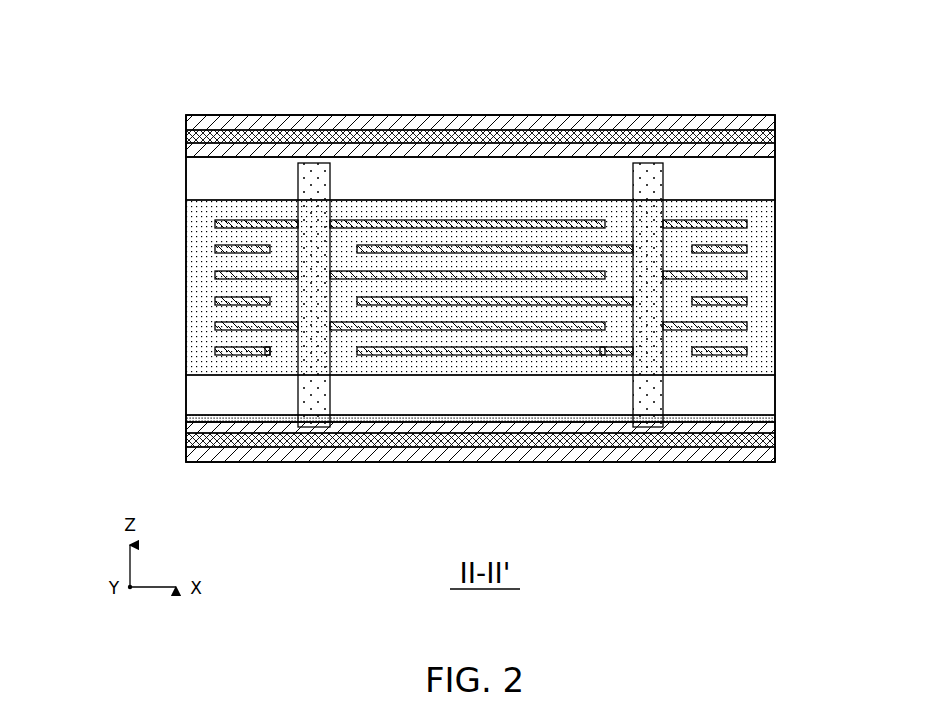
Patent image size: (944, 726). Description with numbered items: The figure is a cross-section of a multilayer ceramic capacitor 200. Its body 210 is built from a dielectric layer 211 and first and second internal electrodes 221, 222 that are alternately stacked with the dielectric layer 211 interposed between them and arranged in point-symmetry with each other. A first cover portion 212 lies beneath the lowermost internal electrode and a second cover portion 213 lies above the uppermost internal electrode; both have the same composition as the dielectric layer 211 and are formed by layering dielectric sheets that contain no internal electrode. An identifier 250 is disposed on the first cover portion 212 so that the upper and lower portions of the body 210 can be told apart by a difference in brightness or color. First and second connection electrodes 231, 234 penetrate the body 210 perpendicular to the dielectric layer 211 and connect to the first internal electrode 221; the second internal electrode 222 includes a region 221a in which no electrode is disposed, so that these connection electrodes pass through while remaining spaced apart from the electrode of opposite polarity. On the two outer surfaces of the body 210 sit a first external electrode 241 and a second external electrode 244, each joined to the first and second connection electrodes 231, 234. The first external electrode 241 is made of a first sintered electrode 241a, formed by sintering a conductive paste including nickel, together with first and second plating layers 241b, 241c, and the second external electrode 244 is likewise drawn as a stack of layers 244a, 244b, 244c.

The multilayer ceramic capacitor 200 is at (284, 38).
The body 210 is at (460, 428).
The dielectric layer 211 is at (745, 319).
The first cover portion 212 is at (775, 389).
The second cover portion 213 is at (770, 178).
The first internal electrode 221 is at (215, 328).
The region in which an electrode is not disposed 221a is at (284, 356).
The second internal electrode 222 is at (745, 352).
The first connection electrode 231 is at (313, 163).
The second connection electrode 234 is at (650, 163).
The first external electrode 241 is at (98, 402).
The first sintered electrode 241a is at (186, 428).
The first plating layer 241b is at (186, 441).
The second plating layer 241c is at (186, 456).
The second external electrode 244 is at (98, 92).
The upper first electrode layer 244a is at (186, 150).
The upper second electrode layer 244b is at (186, 136).
The upper third electrode layer 244c is at (186, 118).
The identifier 250 is at (397, 423).